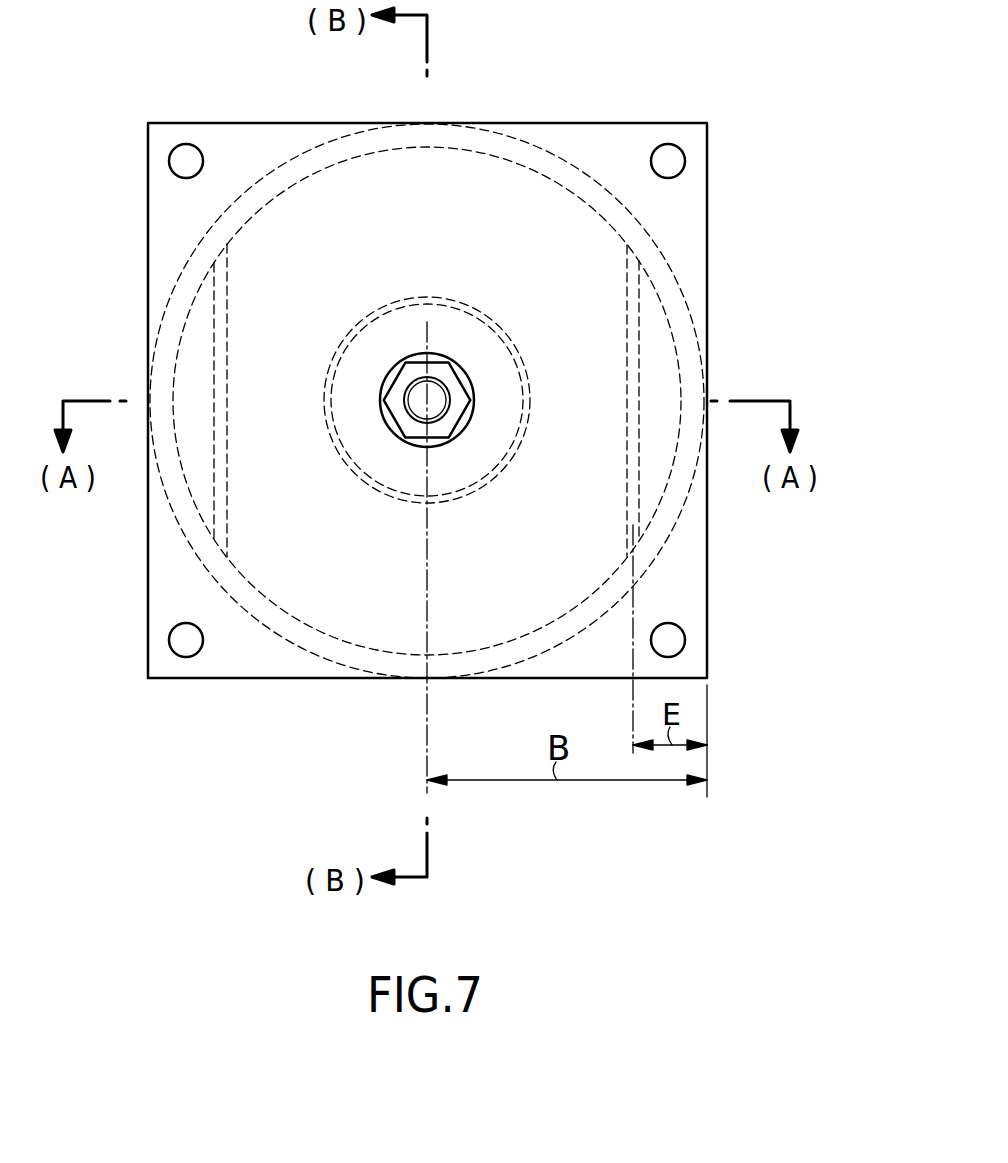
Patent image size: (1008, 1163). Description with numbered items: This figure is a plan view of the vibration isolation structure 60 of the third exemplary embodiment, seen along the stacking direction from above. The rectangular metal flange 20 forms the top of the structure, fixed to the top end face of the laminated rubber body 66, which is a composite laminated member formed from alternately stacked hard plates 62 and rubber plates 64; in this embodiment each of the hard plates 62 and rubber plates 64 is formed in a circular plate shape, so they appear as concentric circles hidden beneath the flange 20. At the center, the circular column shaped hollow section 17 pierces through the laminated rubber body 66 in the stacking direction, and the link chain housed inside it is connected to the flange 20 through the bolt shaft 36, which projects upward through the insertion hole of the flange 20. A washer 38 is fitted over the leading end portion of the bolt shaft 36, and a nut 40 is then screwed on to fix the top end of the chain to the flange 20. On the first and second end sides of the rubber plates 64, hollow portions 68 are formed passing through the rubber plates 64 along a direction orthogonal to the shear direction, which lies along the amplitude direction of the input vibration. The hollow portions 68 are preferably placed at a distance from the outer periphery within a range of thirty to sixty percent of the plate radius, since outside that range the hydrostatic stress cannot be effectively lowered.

The vibration isolation structure 60 is at (499, 357).
The flange 20 is at (682, 233).
The hard plates 62 is at (540, 148).
The rubber plates 64 is at (688, 307).
The laminated rubber body 66 is at (490, 401).
The hollow portions 68 is at (215, 512).
The hollow section 17 is at (457, 483).
The washer 38 is at (470, 385).
The nut 40 is at (383, 421).
The bolt shaft 36 is at (417, 423).